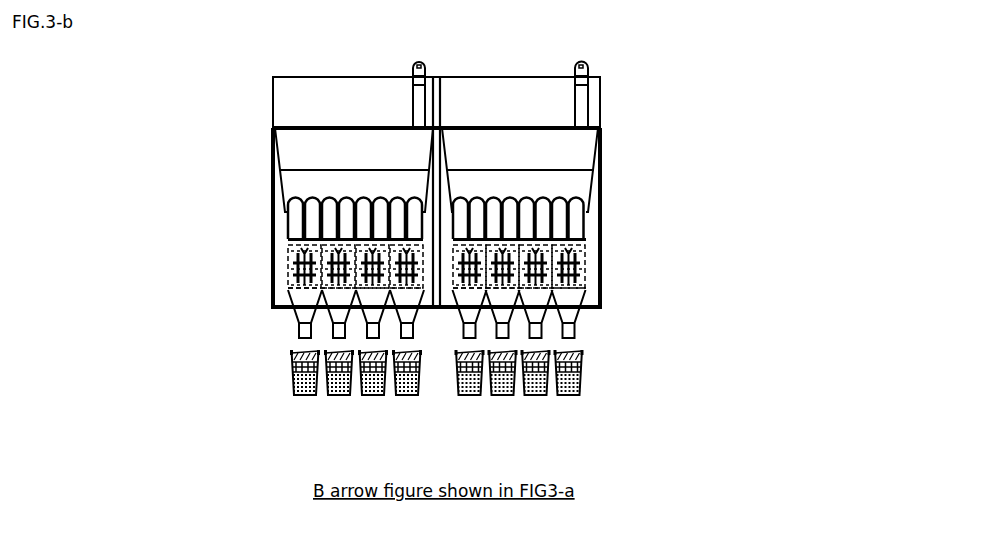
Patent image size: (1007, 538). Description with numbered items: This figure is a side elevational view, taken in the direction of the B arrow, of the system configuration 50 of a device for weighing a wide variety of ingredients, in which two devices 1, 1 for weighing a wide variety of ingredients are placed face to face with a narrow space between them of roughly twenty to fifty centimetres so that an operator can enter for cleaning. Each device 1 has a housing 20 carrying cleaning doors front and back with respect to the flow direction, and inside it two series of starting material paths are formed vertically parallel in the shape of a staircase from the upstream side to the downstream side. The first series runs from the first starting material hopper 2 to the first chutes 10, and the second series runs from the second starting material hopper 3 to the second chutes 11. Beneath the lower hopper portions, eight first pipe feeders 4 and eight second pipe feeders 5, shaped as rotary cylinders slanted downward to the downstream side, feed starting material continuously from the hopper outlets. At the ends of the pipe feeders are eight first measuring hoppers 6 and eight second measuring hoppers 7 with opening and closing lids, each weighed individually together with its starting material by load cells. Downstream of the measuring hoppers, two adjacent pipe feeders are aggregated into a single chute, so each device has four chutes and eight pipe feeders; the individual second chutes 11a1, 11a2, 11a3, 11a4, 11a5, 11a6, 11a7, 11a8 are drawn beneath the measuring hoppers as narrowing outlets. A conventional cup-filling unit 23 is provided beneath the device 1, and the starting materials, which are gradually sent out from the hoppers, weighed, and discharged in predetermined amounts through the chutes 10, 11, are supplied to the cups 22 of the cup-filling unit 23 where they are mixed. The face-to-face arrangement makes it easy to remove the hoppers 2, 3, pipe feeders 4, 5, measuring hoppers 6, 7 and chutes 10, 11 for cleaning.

The device for weighing a wide variety of ingredients 1 is at (328, 76).
The system configuration 50 is at (483, 62).
The first starting material hopper 2 is at (542, 95).
The second starting material hopper 3 is at (592, 112).
The housing 20 is at (600, 150).
The second pipe feeder 5 is at (580, 196).
The second measuring hopper 7 is at (582, 222).
The first pipe feeder 4 is at (584, 248).
The first measuring hopper 6 is at (584, 275).
The second chute 11 is at (434, 369).
The first chute 10 is at (434, 374).
The second chute 11a1 is at (471, 322).
The second chute 11a2 is at (504, 322).
The second chute 11a3 is at (537, 322).
The second chute 11a4 is at (570, 322).
The second chute 11a5 is at (405, 322).
The second chute 11a6 is at (370, 320).
The second chute 11a7 is at (337, 322).
The second chute 11a8 is at (303, 322).
The cup 22 is at (370, 396).
The cup-filling unit 23 is at (451, 409).